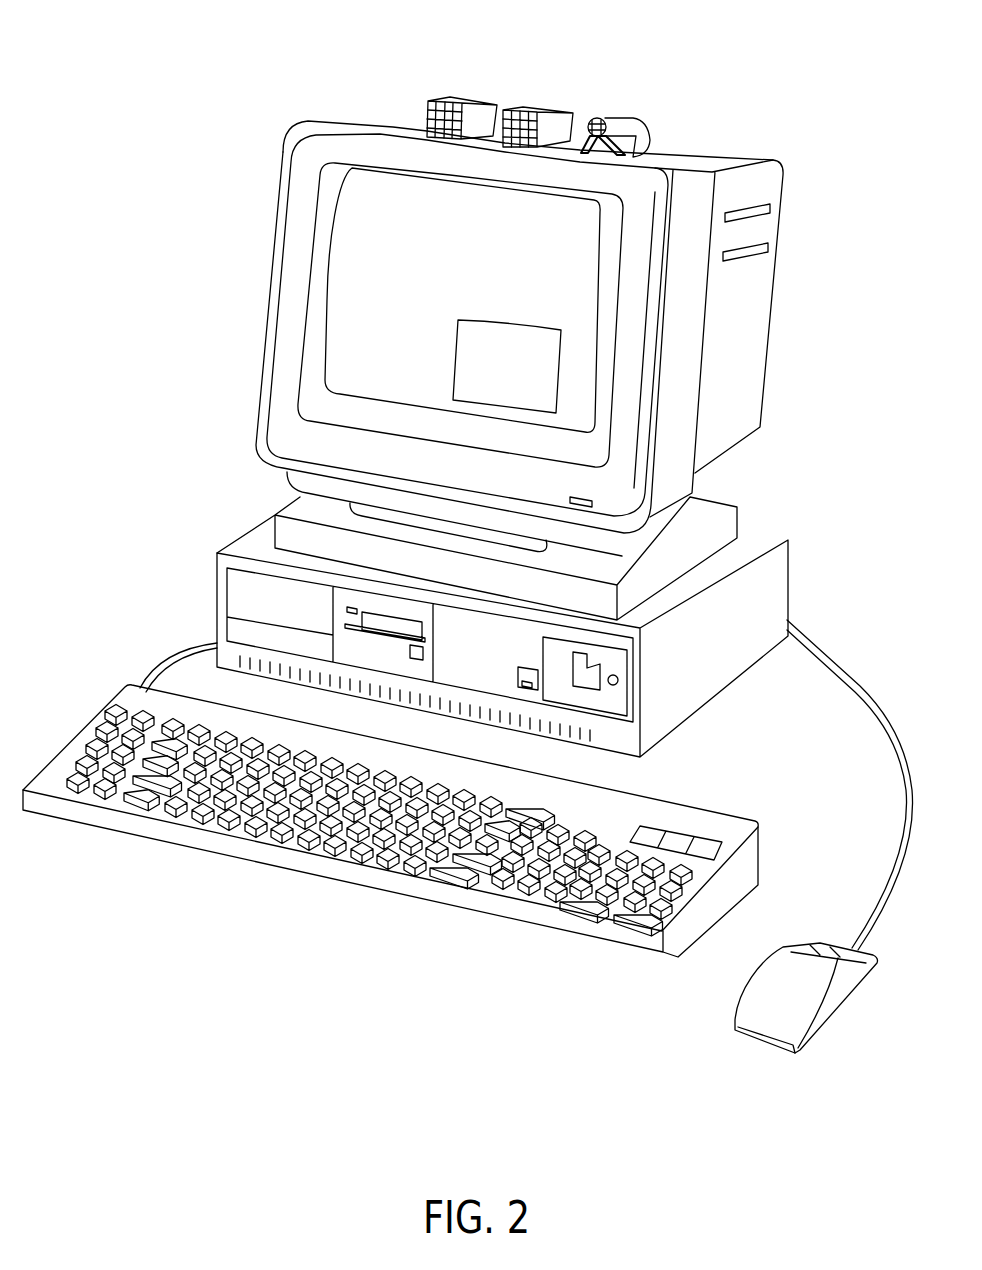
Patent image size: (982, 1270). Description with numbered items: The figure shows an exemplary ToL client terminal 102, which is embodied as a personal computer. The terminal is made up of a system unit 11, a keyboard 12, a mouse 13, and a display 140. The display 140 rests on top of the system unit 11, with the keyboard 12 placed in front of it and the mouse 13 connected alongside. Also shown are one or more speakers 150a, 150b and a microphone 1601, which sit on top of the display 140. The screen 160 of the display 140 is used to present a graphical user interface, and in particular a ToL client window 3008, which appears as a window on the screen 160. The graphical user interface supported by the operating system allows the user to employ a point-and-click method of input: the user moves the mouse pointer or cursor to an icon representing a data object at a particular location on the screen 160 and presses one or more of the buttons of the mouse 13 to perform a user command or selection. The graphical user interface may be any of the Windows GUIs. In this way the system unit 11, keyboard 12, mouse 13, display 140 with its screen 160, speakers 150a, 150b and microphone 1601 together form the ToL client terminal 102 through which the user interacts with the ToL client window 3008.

The ToL client terminal 102 is at (150, 352).
The display 140 is at (277, 233).
The screen 160 is at (405, 342).
The ToL client window 3008 is at (504, 320).
The speaker 150a is at (456, 98).
The speaker 150b is at (519, 108).
The microphone 1601 is at (604, 115).
The system unit 11 is at (216, 587).
The keyboard 12 is at (83, 828).
The mouse 13 is at (845, 998).